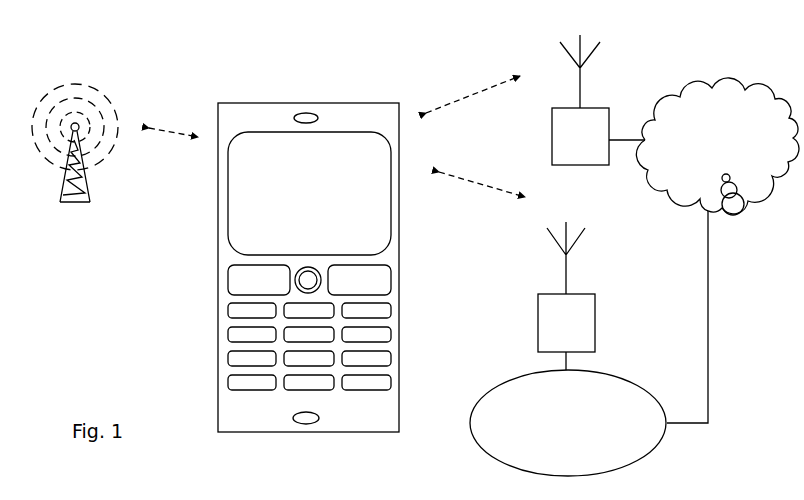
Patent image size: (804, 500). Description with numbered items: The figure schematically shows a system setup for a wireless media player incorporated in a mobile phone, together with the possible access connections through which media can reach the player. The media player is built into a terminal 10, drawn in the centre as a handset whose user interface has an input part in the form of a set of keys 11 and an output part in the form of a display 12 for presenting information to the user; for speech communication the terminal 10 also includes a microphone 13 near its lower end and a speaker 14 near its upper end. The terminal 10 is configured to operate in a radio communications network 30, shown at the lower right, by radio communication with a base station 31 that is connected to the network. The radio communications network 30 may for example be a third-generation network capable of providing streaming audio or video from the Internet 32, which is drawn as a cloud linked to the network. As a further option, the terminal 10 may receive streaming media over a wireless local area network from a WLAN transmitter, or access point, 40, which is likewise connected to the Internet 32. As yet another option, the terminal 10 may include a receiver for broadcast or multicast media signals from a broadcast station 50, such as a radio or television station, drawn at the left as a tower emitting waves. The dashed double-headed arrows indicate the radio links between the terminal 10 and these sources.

The terminal 10 is at (280, 113).
The set of keys 11 is at (372, 332).
The display 12 is at (380, 208).
The microphone 13 is at (305, 420).
The speaker 14 is at (303, 112).
The radio communications network 30 is at (568, 423).
The base station 31 is at (566, 296).
The Internet 32 is at (717, 250).
The WLAN transmitter 40 is at (598, 100).
The broadcast station 50 is at (55, 80).